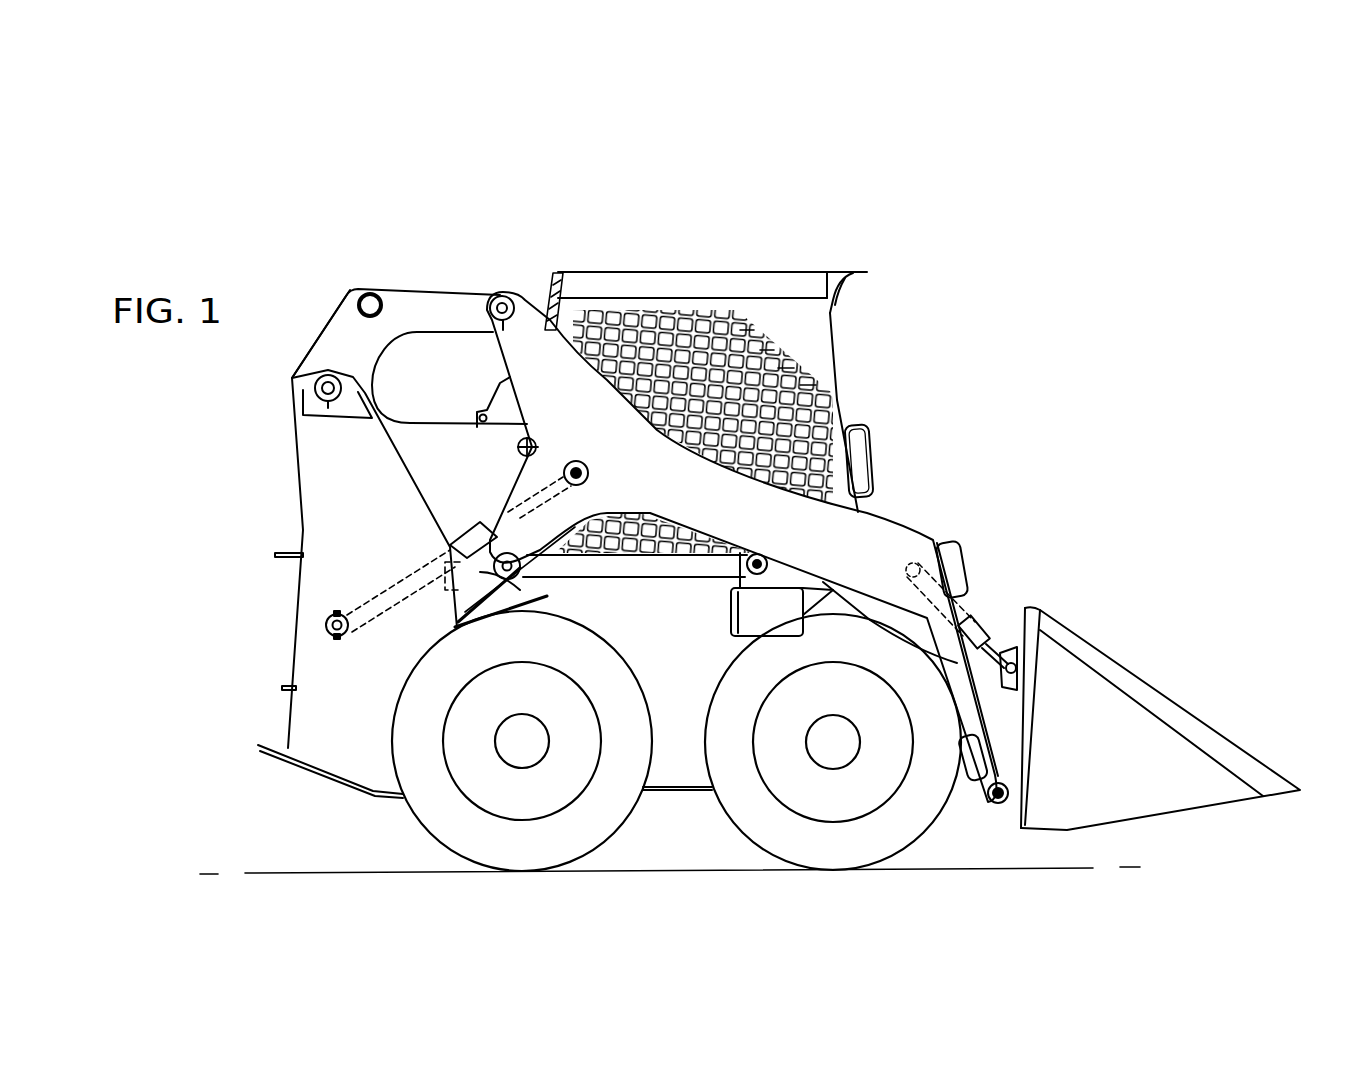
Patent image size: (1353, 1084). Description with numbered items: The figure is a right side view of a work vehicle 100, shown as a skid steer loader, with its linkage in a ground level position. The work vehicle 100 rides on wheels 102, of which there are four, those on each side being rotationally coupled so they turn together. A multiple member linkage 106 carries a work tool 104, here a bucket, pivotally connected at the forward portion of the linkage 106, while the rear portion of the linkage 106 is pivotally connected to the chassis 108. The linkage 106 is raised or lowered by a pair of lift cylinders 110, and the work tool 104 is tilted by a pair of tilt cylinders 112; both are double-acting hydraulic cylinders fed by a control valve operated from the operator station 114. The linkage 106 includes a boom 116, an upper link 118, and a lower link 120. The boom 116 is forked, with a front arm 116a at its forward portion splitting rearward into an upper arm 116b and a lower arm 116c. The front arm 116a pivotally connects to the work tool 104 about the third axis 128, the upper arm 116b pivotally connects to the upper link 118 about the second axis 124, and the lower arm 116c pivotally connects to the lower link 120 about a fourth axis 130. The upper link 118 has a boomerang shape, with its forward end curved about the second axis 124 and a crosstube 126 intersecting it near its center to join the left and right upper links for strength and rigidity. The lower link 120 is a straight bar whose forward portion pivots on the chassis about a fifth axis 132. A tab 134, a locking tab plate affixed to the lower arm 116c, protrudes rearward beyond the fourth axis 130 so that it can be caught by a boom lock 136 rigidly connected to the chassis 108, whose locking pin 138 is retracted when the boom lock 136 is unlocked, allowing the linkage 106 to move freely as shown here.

The work vehicle 100 is at (1080, 355).
The wheels 102 is at (567, 831).
The work tool 104 is at (1207, 718).
The linkage 106 is at (760, 410).
The chassis 108 is at (268, 462).
The lift cylinders 110 is at (476, 531).
The tilt cylinders 112 is at (980, 633).
The operator station 114 is at (820, 242).
The boom 116 is at (647, 407).
The front arm 116a is at (920, 540).
The upper arm 116b is at (535, 300).
The lower arm 116c is at (530, 535).
The upper link 118 is at (430, 300).
The lower link 120 is at (663, 567).
The second axis 124 is at (512, 295).
The crosstube 126 is at (370, 292).
The third axis 128 is at (1010, 793).
The fourth axis 130 is at (520, 590).
The fifth axis 132 is at (757, 553).
The tab 134 is at (463, 570).
The boom lock 136 is at (505, 447).
The locking pin 138 is at (535, 447).